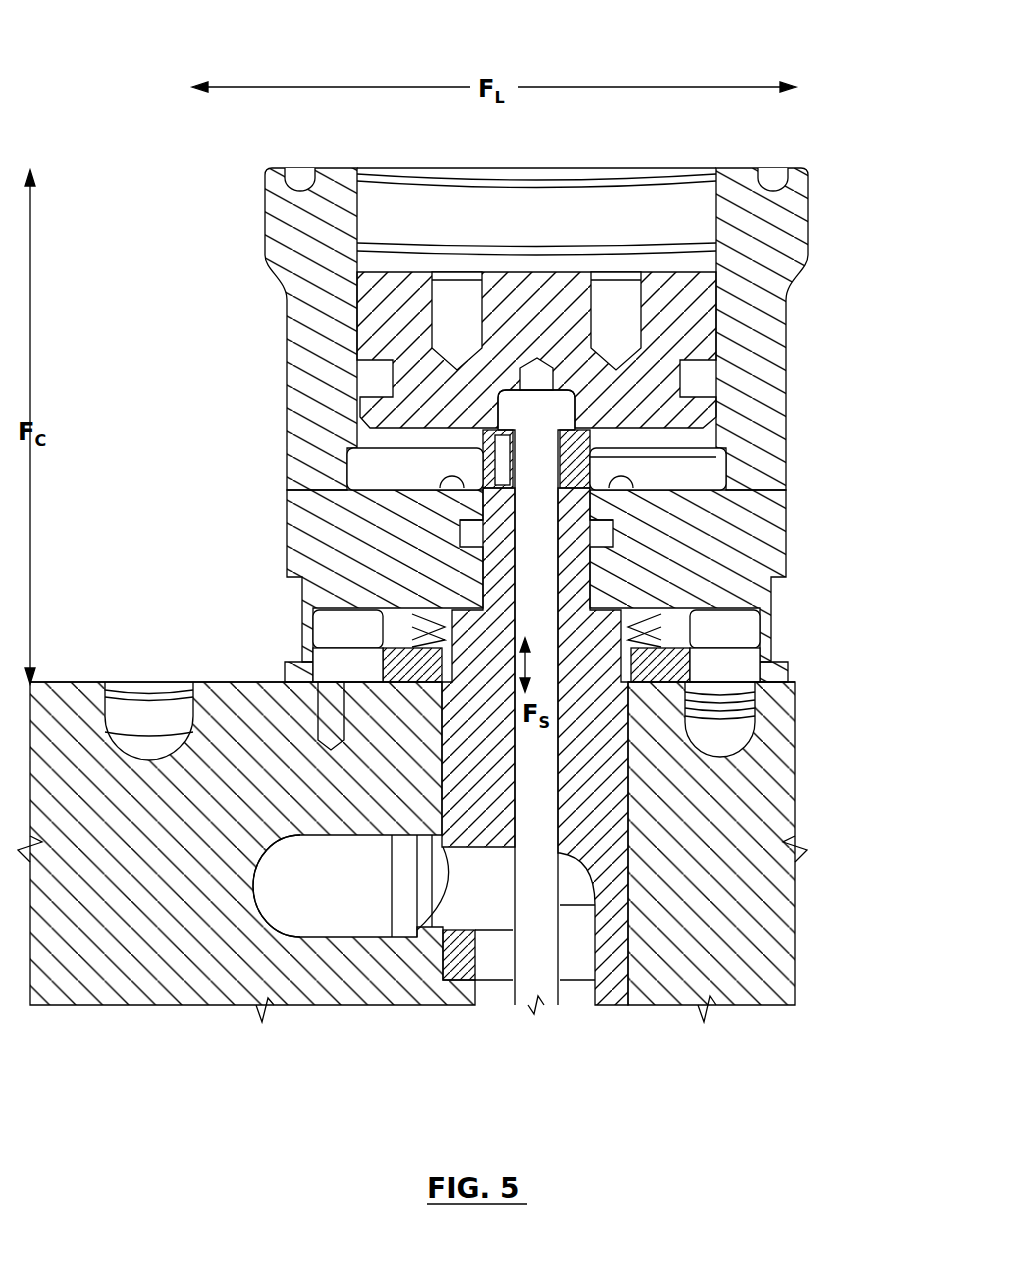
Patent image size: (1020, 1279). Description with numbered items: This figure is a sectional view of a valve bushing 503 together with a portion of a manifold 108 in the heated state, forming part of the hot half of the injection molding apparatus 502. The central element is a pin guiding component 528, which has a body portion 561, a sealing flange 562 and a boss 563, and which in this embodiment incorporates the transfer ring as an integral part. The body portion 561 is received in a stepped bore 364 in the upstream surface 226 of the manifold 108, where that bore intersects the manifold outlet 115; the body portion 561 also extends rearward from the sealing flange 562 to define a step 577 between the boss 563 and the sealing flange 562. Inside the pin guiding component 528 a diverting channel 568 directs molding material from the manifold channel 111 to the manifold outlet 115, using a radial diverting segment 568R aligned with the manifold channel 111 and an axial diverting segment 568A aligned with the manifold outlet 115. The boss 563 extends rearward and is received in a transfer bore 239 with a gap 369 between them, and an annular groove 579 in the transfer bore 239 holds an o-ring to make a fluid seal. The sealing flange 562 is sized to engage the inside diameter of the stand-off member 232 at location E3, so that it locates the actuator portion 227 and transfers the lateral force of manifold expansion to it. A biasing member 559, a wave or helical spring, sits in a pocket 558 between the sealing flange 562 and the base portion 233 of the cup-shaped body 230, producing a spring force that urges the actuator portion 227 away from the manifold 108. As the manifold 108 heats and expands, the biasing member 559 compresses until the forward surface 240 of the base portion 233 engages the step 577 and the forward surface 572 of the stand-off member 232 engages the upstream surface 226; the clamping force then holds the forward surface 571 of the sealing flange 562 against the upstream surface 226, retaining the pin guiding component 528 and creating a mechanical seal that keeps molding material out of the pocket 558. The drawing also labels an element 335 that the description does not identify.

The injection molding apparatus 502 is at (108, 130).
The valve bushing 503 is at (125, 485).
The actuator portion 227 is at (254, 366).
The cup-shaped body 230 is at (305, 420).
The transfer bore 239 is at (493, 557).
The base portion 233 is at (345, 548).
The upstream surface 226 is at (60, 680).
The forward surface 240 is at (320, 617).
The stand-off member 232 is at (290, 668).
The forward surface 571 is at (330, 705).
The housing cap 335 is at (750, 325).
The gap 369 is at (600, 450).
The annular groove 579 is at (592, 563).
The boss 563 is at (600, 522).
The step 577 is at (640, 590).
The pocket 558 is at (700, 600).
The biasing member 559 is at (690, 615).
The sealing flange 562 is at (745, 665).
The forward surface 572 is at (745, 700).
The location E3 is at (805, 740).
The pin guiding component 528 is at (662, 765).
The body portion 561 is at (612, 862).
The stepped bore 364 is at (565, 907).
The manifold 108 is at (733, 957).
The manifold channel 111 is at (315, 910).
The radial diverting segment 568R is at (475, 887).
The axial diverting segment 568A is at (493, 953).
The diverting channel 568 is at (507, 1072).
The manifold outlet 115 is at (583, 1010).